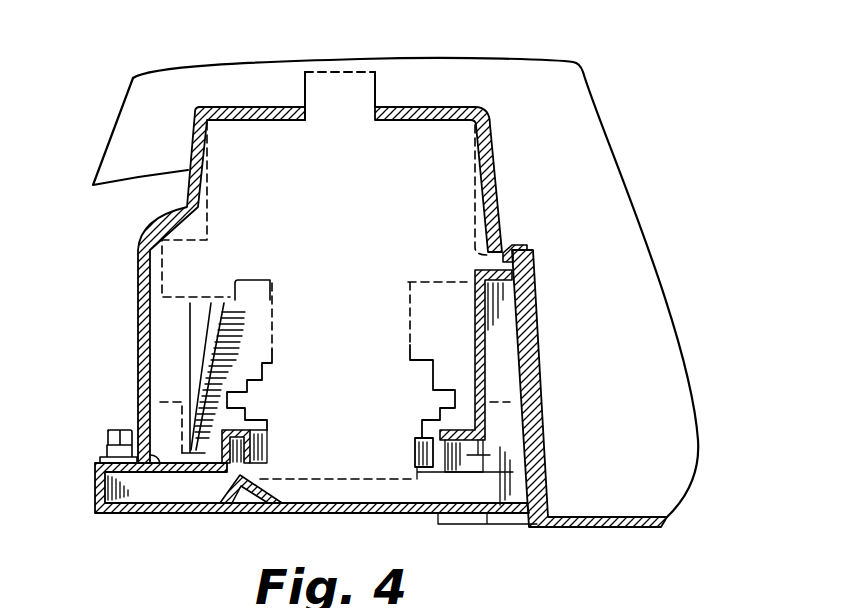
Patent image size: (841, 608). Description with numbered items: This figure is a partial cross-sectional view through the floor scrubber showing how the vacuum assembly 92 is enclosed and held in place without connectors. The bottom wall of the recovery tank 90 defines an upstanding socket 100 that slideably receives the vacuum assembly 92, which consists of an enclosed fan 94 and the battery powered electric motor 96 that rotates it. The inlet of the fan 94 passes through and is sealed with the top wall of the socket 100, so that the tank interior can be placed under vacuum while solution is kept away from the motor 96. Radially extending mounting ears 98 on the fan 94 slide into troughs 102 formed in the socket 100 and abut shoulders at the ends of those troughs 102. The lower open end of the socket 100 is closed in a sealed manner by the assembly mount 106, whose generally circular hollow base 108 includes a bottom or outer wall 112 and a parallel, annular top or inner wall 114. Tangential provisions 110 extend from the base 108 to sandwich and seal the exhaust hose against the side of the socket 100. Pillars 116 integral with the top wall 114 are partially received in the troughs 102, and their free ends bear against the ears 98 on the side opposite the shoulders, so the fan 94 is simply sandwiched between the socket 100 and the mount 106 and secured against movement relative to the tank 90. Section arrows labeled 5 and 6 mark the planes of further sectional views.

The recovery tank 90 is at (697, 458).
The vacuum assembly 92 is at (320, 240).
The enclosed fan 94 is at (477, 215).
The electric motor 96 is at (410, 348).
The mounting ears 98 is at (503, 254).
The upstanding socket 100 is at (415, 107).
The troughs 102 is at (533, 293).
The assembly mount 106 is at (288, 517).
The base 108 is at (330, 513).
The provisions 110 is at (150, 515).
The bottom or outer wall 112 is at (190, 513).
The top or inner wall 114 is at (163, 463).
The pillars 116 is at (223, 355).
The section line 5 is at (75, 505).
The section line 6 is at (130, 400).